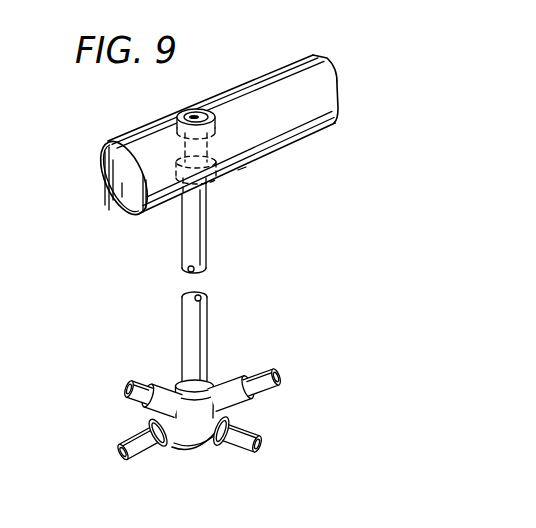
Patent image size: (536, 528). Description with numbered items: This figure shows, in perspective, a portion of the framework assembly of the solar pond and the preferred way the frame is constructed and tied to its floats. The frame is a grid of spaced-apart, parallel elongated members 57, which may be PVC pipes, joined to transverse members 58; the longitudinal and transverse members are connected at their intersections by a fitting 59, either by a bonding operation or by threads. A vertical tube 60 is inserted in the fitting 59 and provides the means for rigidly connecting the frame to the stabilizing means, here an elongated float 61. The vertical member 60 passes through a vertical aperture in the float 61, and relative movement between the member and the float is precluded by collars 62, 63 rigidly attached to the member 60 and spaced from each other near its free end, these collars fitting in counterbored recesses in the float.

The elongated members 57 is at (141, 385).
The transverse members 58 is at (256, 378).
The fittings 59 is at (189, 433).
The vertical tubes 60 is at (182, 246).
The elongated float 61 is at (287, 87).
The collar 62 is at (192, 114).
The collar 63 is at (242, 172).